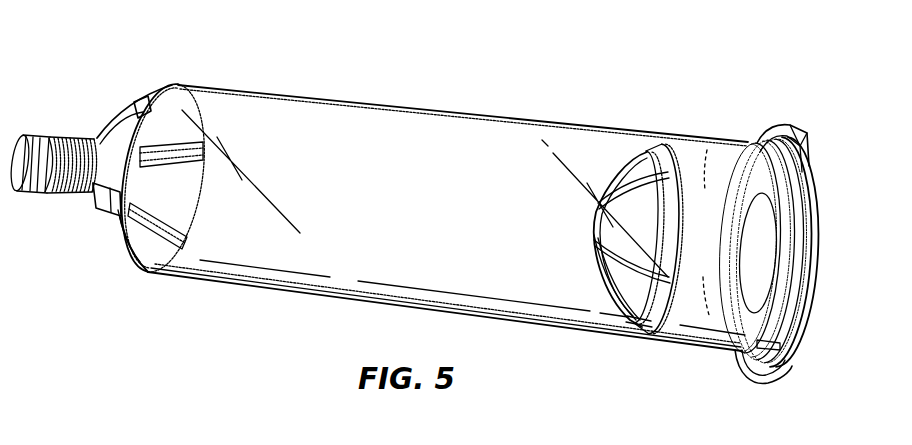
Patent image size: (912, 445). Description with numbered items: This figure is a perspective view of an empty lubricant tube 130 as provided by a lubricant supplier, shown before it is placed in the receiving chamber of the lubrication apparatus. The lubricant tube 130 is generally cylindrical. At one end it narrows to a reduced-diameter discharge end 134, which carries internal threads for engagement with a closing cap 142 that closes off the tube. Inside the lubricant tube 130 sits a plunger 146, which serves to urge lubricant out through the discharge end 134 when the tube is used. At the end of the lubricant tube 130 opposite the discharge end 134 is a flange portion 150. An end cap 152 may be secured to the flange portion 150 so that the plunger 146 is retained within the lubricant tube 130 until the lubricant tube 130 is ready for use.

The lubricant tube 130 is at (476, 67).
The discharge end 134 is at (79, 138).
The closing cap 142 is at (18, 138).
The plunger 146 is at (688, 165).
The flange portion 150 is at (809, 173).
The end cap 152 is at (789, 372).